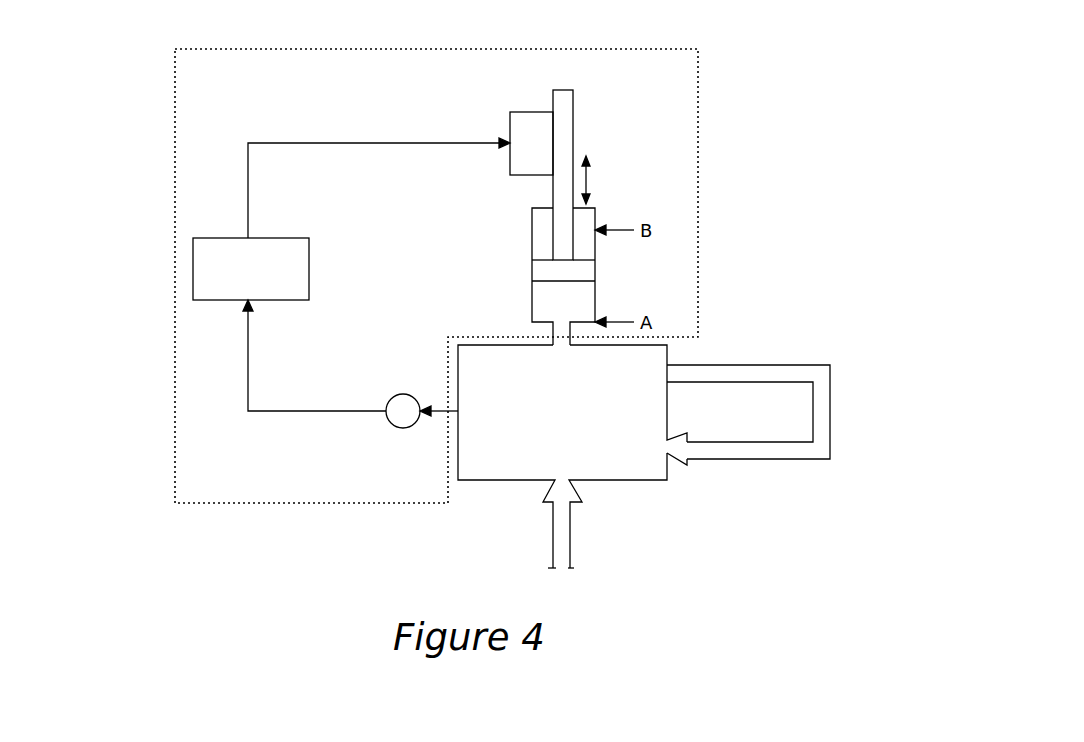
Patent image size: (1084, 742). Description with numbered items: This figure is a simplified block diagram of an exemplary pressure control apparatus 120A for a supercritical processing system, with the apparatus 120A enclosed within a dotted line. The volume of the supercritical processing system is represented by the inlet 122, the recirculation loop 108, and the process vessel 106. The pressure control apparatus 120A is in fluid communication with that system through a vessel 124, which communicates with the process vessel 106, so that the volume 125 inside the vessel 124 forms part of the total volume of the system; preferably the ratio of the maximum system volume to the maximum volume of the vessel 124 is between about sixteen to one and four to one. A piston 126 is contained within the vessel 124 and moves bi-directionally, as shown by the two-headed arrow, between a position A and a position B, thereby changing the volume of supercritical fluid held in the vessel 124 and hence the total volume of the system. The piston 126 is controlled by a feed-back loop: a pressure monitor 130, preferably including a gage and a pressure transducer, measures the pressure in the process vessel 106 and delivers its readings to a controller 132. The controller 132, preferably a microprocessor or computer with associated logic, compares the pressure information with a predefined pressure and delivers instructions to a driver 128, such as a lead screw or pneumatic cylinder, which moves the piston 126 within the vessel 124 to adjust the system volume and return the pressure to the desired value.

The pressure control apparatus 120A is at (208, 46).
The driver 128 is at (511, 121).
The vessel 124 is at (596, 298).
The piston 126 is at (537, 269).
The volume 125 is at (540, 304).
The controller 132 is at (302, 267).
The pressure monitor 130 is at (399, 420).
The process vessel 106 is at (490, 473).
The recirculation loop 108 is at (747, 367).
The inlet 122 is at (568, 547).